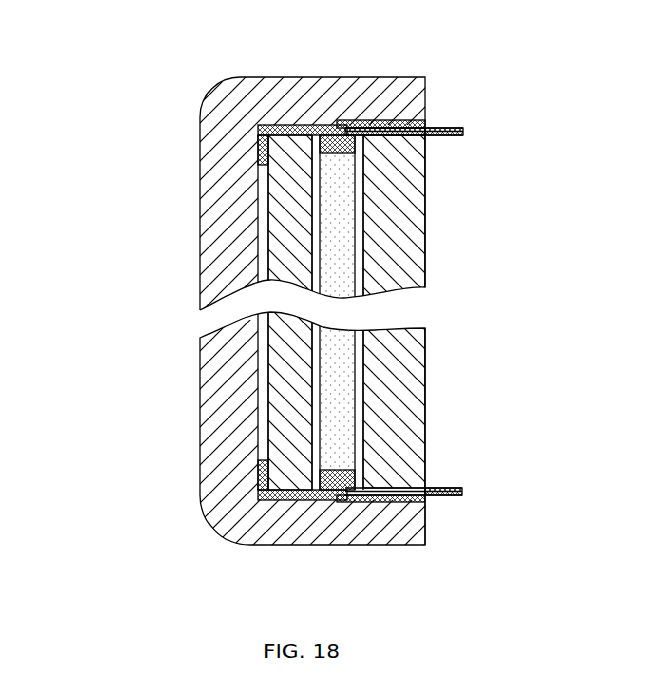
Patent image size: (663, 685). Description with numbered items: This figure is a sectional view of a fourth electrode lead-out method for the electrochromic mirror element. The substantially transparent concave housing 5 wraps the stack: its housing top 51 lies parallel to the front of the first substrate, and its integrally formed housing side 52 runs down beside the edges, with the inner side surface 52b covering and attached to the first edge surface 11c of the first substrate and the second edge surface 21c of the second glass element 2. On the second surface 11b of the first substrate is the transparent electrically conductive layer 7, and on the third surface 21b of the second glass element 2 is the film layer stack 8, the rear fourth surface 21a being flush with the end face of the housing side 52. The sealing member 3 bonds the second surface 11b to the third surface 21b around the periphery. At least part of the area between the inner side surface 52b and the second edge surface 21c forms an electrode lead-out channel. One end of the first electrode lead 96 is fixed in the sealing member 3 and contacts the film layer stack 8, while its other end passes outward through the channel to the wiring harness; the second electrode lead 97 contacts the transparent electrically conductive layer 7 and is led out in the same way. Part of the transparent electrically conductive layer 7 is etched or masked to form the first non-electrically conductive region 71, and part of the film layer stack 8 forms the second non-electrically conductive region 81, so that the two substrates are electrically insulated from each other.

The second glass element 2 is at (397, 402).
The sealing member 3 is at (300, 505).
The concave housing 5 is at (82, 178).
The transparent electrically conductive layer 7 is at (305, 376).
The film layer stack 8 is at (350, 266).
The housing top 51 is at (232, 258).
The housing side 52 is at (310, 103).
The inner side surface 52b is at (393, 123).
The first non-electrically conductive region 71 is at (340, 470).
The second non-electrically conductive region 81 is at (364, 165).
The second surface 11b is at (300, 416).
The first edge surface 11c is at (262, 127).
The fourth surface 21a is at (427, 437).
The third surface 21b is at (368, 330).
The second edge surface 21c is at (392, 135).
The first electrode lead 96 is at (435, 493).
The second electrode lead 97 is at (437, 127).